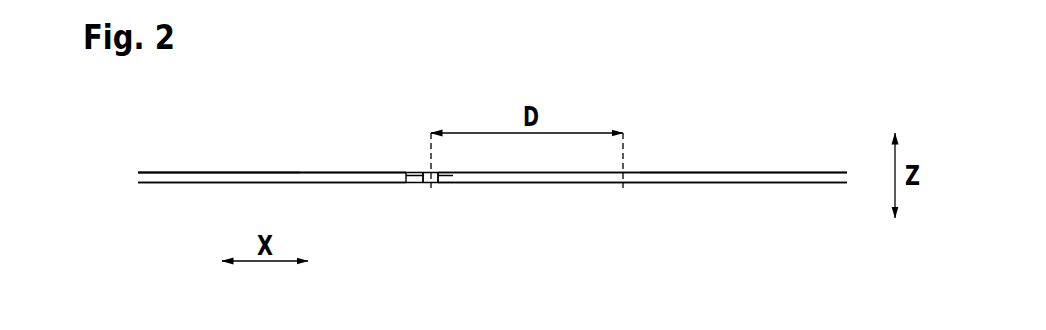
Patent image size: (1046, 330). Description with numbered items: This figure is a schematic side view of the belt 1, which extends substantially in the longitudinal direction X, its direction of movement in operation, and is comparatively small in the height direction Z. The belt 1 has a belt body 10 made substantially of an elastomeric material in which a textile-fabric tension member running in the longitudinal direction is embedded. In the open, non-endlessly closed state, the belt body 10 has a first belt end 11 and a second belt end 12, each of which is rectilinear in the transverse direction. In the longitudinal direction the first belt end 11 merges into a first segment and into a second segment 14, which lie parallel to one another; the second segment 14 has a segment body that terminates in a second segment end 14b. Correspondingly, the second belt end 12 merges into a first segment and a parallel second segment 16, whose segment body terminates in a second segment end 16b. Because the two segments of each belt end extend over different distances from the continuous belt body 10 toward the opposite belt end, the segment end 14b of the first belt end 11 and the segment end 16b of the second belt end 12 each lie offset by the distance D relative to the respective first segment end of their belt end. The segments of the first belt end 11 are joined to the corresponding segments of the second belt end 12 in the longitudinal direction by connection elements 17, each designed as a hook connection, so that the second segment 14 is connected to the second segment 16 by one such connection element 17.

The belt 1 is at (148, 157).
The belt body 10 is at (223, 182).
The first belt end 11 is at (718, 155).
The second belt end 12 is at (266, 154).
The second segment of the first belt end 14 is at (561, 178).
The second segment end of the first belt end 14b is at (444, 190).
The second segment of the second belt end 16 is at (301, 182).
The second segment end of the second belt end 16b is at (416, 169).
The connection element 17 is at (424, 190).